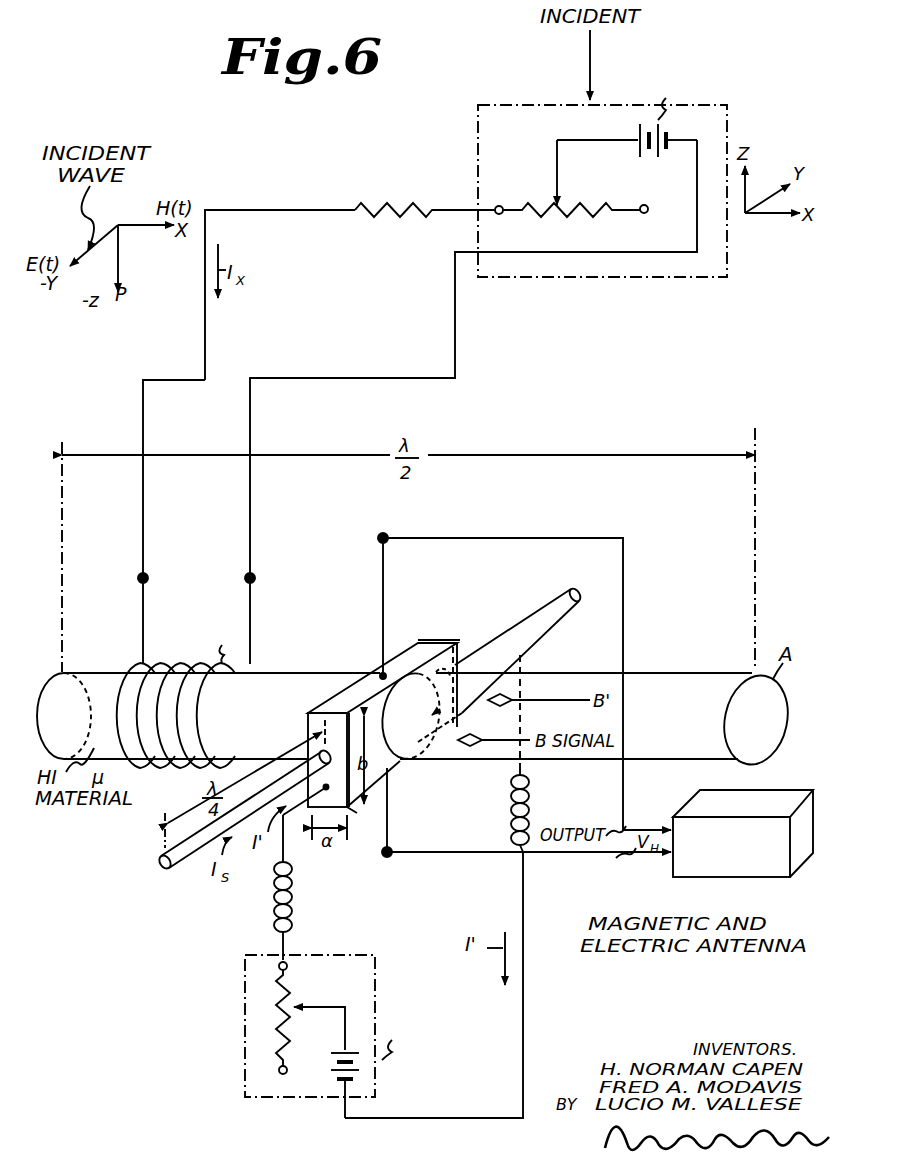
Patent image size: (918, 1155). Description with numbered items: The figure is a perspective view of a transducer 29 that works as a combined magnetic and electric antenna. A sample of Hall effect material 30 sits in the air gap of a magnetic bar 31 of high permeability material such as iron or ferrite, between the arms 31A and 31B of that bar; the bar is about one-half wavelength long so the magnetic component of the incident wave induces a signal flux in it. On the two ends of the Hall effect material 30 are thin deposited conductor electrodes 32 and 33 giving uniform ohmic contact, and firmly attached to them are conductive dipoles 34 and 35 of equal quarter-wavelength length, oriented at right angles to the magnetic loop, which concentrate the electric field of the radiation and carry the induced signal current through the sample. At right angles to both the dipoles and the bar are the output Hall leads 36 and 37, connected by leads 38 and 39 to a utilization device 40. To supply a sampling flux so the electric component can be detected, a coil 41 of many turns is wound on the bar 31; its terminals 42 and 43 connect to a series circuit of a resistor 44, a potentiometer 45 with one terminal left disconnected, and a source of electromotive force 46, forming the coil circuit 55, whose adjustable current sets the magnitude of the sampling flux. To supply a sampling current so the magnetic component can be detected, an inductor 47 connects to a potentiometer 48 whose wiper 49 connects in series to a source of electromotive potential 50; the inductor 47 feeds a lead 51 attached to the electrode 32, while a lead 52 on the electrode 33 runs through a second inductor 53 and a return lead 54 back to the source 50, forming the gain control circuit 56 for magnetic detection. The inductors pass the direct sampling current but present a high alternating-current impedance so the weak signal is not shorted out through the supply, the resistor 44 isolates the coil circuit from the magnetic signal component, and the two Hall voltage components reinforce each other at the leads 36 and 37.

The transducer 29 is at (297, 190).
The Hall effect material 30 is at (364, 691).
The magnetic bar of high permeability material 31 is at (772, 748).
The arm of the magnetic focusing bar 31A is at (590, 672).
The arm of the magnetic focusing bar 31B is at (311, 674).
The electrode 32 is at (350, 808).
The electrode 33 is at (448, 641).
The dipole 34 is at (170, 864).
The dipole 35 is at (530, 620).
The output Hall lead 36 is at (383, 605).
The output Hall lead 37 is at (387, 813).
The lead 38 is at (503, 538).
The lead 39 is at (438, 853).
The utilization device 40 is at (680, 875).
The coil 41 is at (164, 662).
The coil terminal 42 is at (147, 577).
The coil terminal 43 is at (254, 577).
The resistor R1 44 is at (396, 214).
The potentiometer R2 45 is at (590, 225).
The source of electromotive force Ex 46 is at (652, 154).
The inductor L1 47 is at (692, 206).
The potentiometer R3 48 is at (278, 976).
The wiper 49 is at (337, 998).
The source of electromotive potential Ey 50 is at (360, 1062).
The lead 51 is at (290, 819).
The lead 52 is at (526, 656).
The inductor L2 53 is at (511, 800).
The return lead 54 is at (524, 913).
The coil circuit (E gain control) 55 is at (677, 277).
The B gain control circuit 56 is at (244, 974).